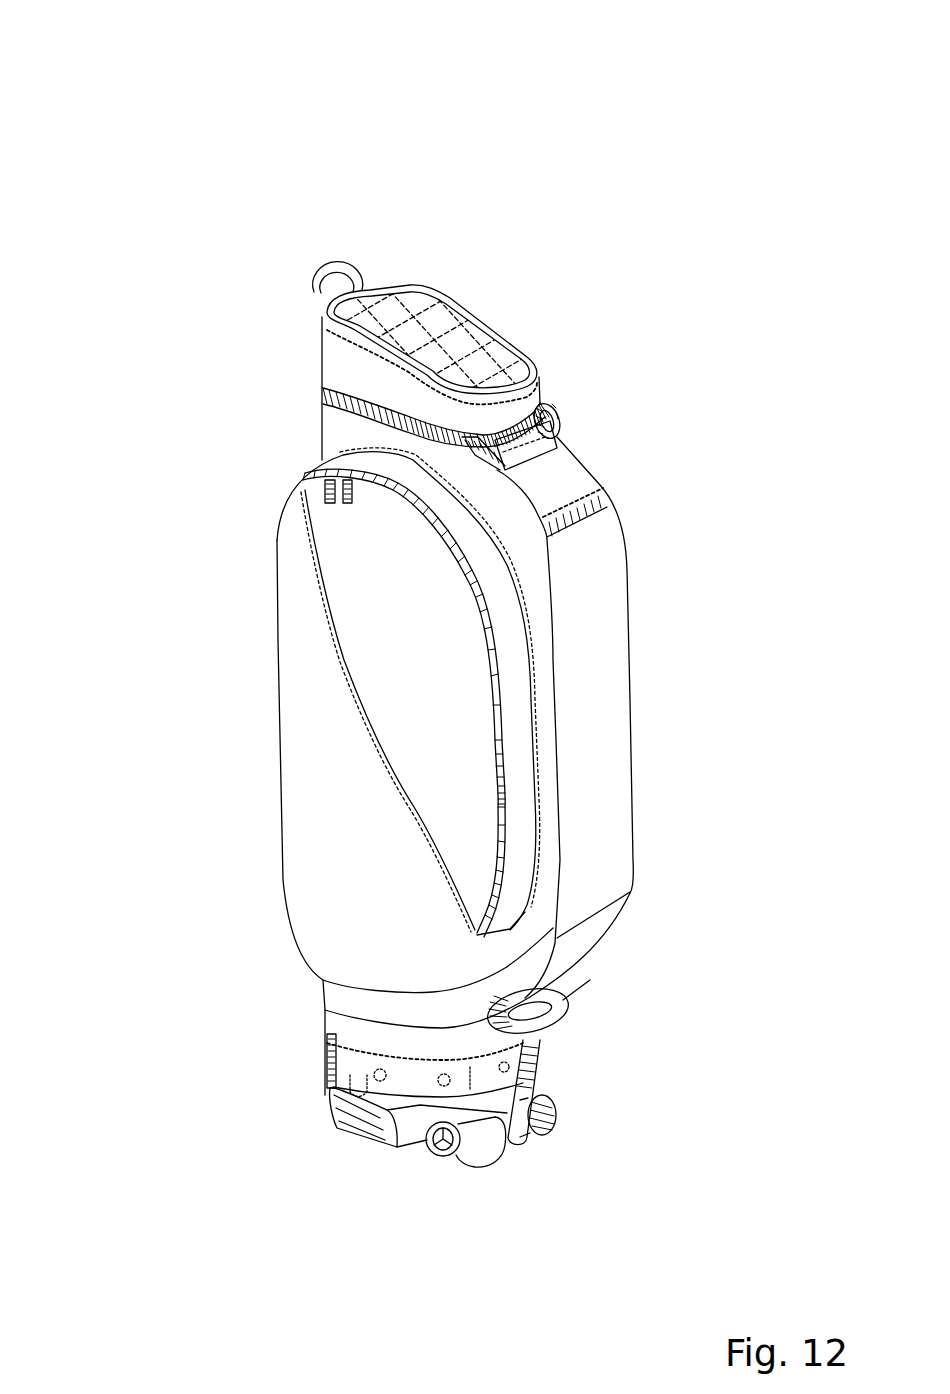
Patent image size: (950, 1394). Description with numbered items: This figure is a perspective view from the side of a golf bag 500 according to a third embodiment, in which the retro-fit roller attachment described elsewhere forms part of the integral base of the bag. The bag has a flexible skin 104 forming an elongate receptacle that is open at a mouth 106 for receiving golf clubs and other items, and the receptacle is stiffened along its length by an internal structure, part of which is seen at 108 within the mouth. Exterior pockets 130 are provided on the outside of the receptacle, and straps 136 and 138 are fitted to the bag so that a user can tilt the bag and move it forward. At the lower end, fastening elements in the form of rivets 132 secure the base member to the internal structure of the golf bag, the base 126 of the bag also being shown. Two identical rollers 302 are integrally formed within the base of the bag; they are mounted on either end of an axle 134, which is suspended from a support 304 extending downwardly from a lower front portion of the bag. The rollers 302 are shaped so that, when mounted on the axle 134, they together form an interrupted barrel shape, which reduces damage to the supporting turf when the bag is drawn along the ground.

The golf bag 500 is at (165, 173).
The flexible skin 104 is at (595, 720).
The mouth 106 is at (532, 353).
The internal structure 108 is at (430, 330).
The base 126 is at (335, 1128).
The exterior pockets 130 is at (387, 697).
The rivets 132 is at (380, 1075).
The axle 134 is at (435, 1158).
The strap 136 is at (318, 265).
The strap 138 is at (556, 443).
The rollers 302 is at (538, 1142).
The support 304 is at (518, 1110).